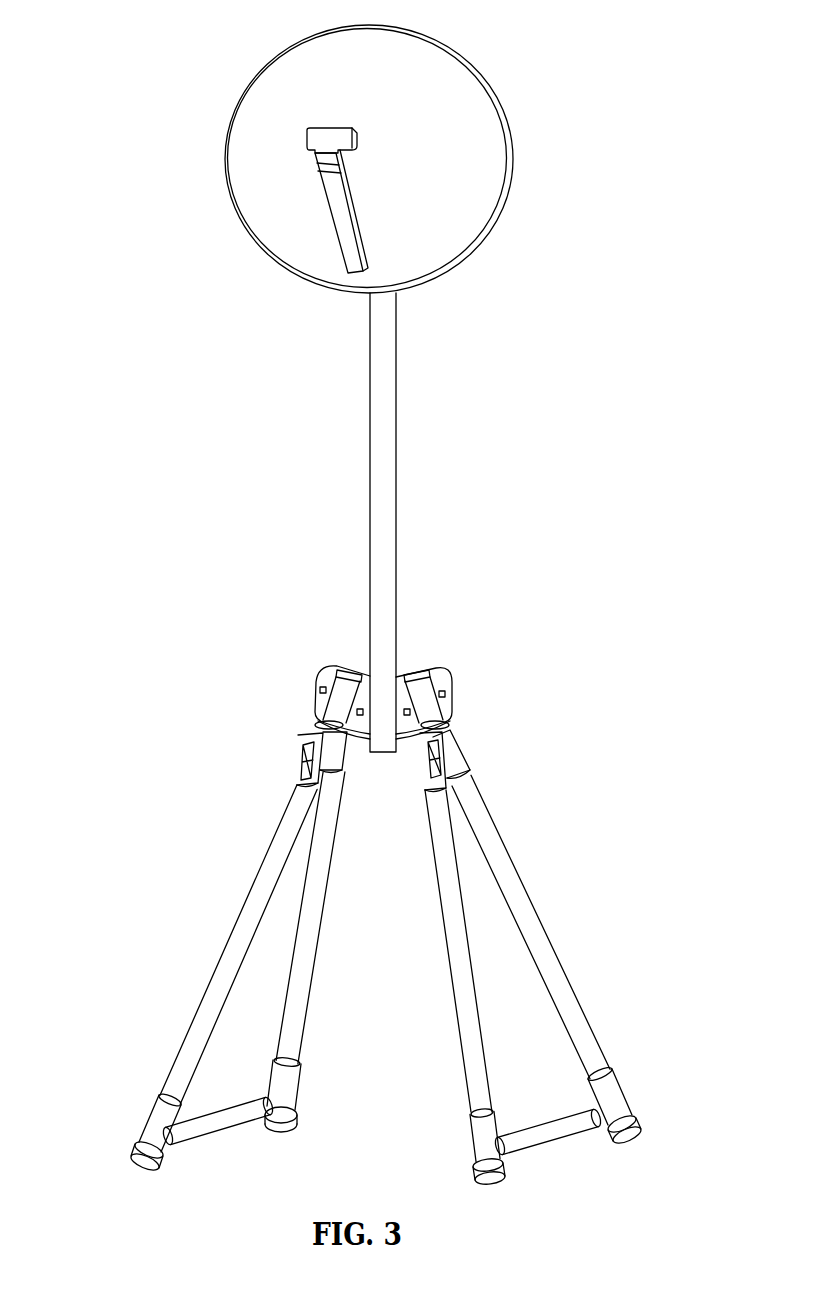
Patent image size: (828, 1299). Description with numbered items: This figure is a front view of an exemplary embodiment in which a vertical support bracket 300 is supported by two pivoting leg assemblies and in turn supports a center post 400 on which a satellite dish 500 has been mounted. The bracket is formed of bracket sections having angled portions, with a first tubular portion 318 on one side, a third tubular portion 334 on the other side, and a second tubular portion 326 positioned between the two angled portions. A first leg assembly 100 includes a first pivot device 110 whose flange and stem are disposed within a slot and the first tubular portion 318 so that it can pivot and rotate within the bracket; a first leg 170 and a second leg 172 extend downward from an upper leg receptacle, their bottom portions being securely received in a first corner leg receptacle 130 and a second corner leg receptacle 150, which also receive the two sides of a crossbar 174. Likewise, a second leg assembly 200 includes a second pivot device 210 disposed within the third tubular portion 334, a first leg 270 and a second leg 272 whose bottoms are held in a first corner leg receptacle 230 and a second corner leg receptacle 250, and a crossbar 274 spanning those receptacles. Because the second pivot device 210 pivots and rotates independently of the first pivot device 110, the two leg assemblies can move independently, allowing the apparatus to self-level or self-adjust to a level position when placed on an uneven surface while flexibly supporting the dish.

The satellite dish 500 is at (283, 49).
The center post 400 is at (399, 447).
The vertical support bracket 300 is at (406, 719).
The first tubular portion 318 is at (340, 708).
The third tubular portion 334 is at (433, 714).
The second tubular portion 326 is at (385, 725).
The first pivot device 110 is at (298, 762).
The second pivot device 210 is at (478, 760).
The first leg assembly 100 is at (233, 957).
The second leg assembly 200 is at (543, 969).
The first leg 170 is at (220, 955).
The second leg 172 is at (322, 936).
The first corner leg receptacle 130 is at (136, 1136).
The second corner leg receptacle 150 is at (304, 1104).
The crossbar 174 is at (226, 1133).
The first leg 270 is at (559, 955).
The second leg 272 is at (450, 967).
The first corner leg receptacle 230 is at (634, 1108).
The second corner leg receptacle 250 is at (467, 1130).
The crossbar 274 is at (557, 1144).